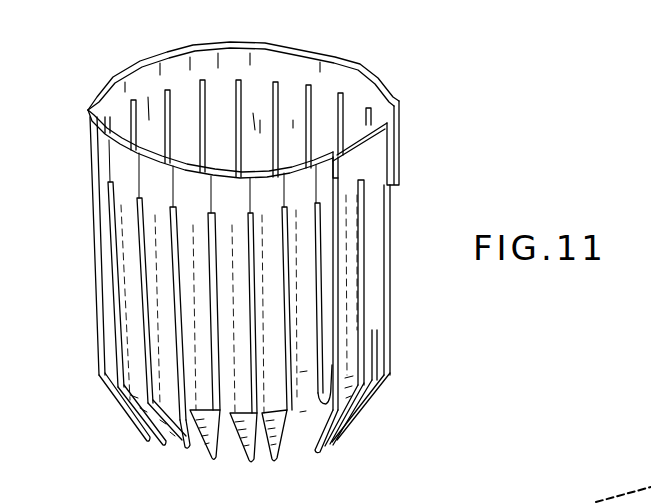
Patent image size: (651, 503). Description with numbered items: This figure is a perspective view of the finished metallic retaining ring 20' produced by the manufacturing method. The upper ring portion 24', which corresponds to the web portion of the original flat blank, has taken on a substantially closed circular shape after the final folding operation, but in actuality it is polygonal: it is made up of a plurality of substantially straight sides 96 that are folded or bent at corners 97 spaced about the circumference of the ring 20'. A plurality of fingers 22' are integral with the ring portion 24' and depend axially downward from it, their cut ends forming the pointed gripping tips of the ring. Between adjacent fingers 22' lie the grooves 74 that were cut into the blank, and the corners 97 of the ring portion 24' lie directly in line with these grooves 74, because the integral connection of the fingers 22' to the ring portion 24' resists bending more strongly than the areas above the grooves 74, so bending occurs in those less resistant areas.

The finished retaining ring 20' is at (252, 243).
The ring portion 24' is at (254, 101).
The corners 97 is at (383, 143).
The straight sides 96 is at (283, 192).
The grooves 74 is at (147, 290).
The fingers 22' is at (272, 407).